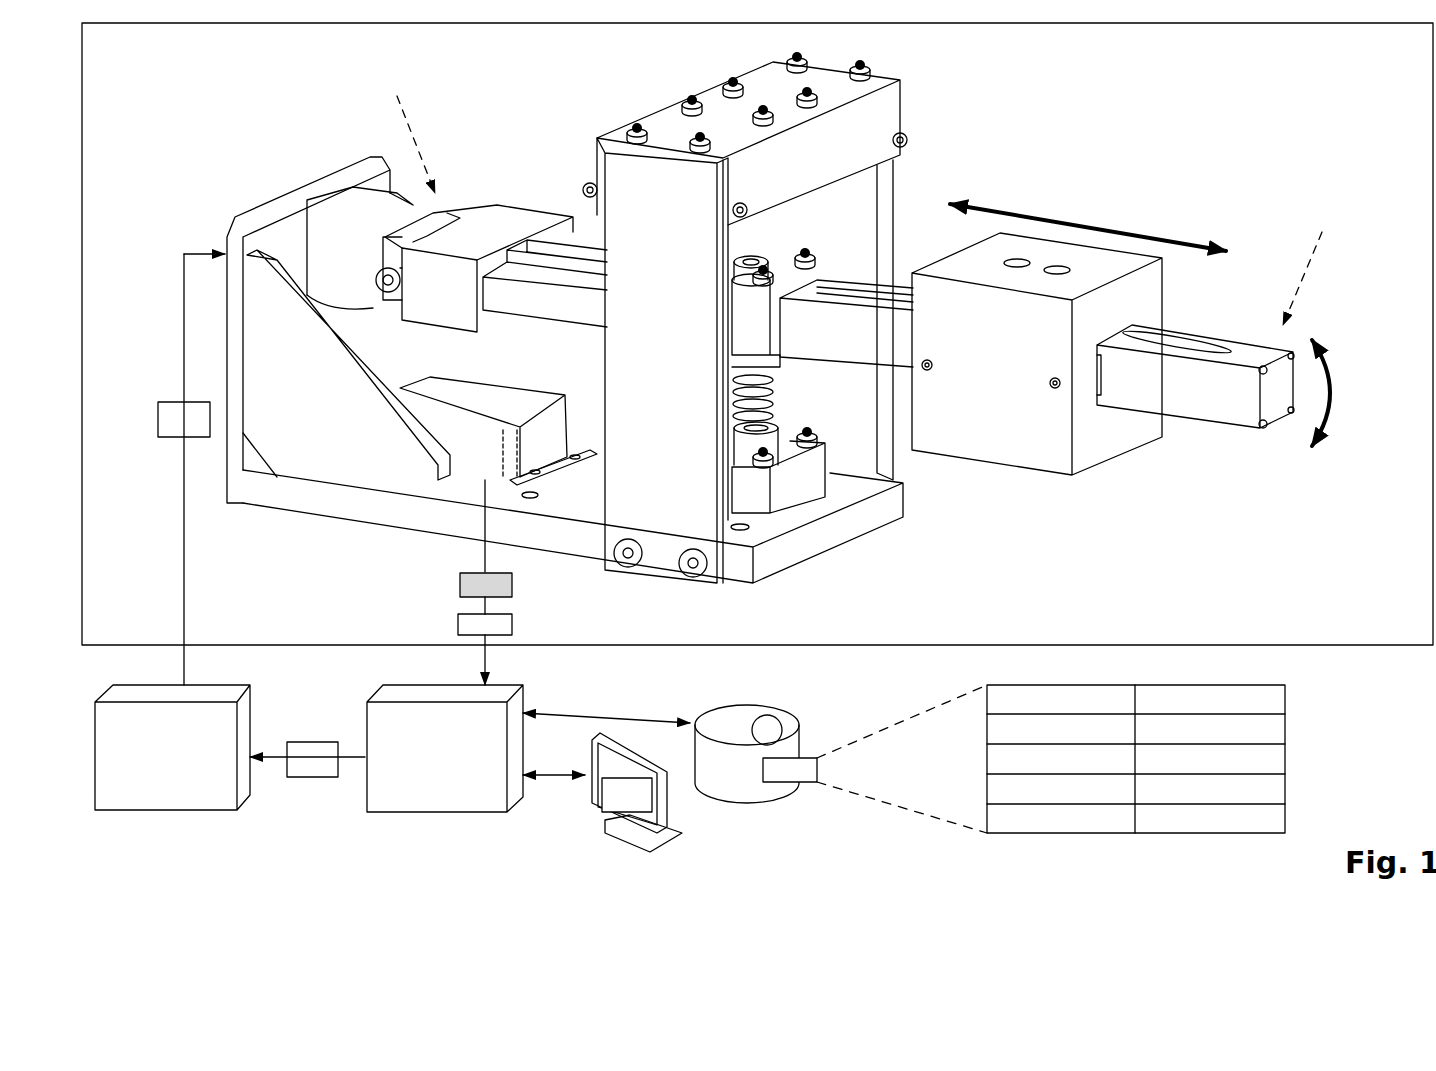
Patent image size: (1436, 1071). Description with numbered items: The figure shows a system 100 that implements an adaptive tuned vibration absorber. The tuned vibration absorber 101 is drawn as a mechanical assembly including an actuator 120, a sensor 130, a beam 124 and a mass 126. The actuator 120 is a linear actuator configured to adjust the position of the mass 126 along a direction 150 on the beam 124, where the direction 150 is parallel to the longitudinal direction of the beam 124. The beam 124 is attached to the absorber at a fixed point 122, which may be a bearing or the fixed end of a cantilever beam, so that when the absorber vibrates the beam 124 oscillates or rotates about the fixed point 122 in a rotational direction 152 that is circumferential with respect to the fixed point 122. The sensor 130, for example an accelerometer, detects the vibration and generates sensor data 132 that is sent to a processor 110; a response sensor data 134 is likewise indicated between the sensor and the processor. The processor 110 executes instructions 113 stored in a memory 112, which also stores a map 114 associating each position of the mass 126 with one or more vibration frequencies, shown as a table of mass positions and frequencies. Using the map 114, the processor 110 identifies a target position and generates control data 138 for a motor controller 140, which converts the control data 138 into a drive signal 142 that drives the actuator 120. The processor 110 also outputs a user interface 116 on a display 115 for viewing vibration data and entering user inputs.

The system 100 is at (1391, 776).
The tuned vibration absorber 101 is at (1405, 72).
The processor 110 is at (445, 748).
The memory 112 is at (945, 765).
The instructions 113 is at (765, 730).
The map 114 is at (787, 770).
The display 115 is at (592, 801).
The user interface 116 is at (627, 795).
The actuator 120 is at (502, 229).
The fixed point 122 is at (373, 267).
The beam 124 is at (1205, 388).
The mass 126 is at (1000, 423).
The sensor 130 is at (470, 450).
The sensor data 132 is at (485, 625).
The response sensor data 134 is at (497, 587).
The control data 138 is at (313, 758).
The motor controller 140 is at (172, 747).
The drive signal 142 is at (185, 418).
The direction 150 is at (1093, 211).
The rotational direction 152 is at (1370, 389).